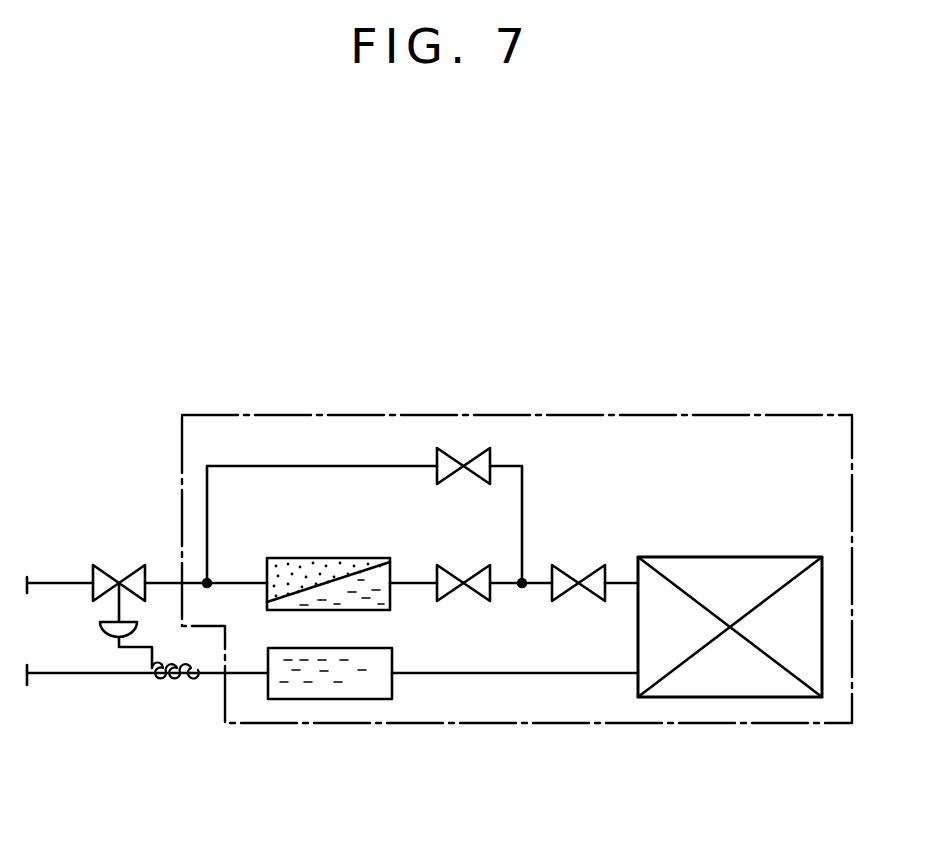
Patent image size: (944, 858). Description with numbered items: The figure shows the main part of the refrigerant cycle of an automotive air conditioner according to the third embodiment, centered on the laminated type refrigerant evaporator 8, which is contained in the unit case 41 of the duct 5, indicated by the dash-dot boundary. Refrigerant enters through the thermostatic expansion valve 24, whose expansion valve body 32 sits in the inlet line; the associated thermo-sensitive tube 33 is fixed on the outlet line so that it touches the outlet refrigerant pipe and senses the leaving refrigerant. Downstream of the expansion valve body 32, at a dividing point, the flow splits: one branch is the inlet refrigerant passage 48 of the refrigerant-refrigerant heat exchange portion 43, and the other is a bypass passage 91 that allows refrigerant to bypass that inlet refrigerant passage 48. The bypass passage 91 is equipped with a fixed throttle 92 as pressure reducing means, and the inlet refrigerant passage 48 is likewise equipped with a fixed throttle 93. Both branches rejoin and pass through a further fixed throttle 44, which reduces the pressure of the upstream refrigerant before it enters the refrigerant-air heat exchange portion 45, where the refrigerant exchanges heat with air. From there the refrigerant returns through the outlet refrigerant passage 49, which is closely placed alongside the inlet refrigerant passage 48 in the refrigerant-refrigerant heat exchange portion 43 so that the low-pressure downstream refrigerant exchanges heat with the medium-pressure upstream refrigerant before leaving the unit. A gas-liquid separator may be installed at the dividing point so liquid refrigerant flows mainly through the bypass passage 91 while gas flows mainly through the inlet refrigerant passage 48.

The duct 5 is at (787, 411).
The laminated type refrigerant evaporator 8 is at (788, 541).
The thermostatic expansion valve 24 is at (85, 562).
The expansion valve body 32 is at (133, 580).
The thermo-sensitive tube 33 is at (200, 668).
The unit case 41 is at (690, 414).
The refrigerant-refrigerant heat exchange portion 43 is at (359, 544).
The fixed throttle 44 is at (588, 575).
The refrigerant-air heat exchange portion 45 is at (698, 570).
The inlet refrigerant passage 48 is at (285, 558).
The outlet refrigerant passage 49 is at (308, 700).
The bypass passage 91 is at (323, 465).
The fixed throttle 92 is at (478, 460).
The fixed throttle 93 is at (447, 590).